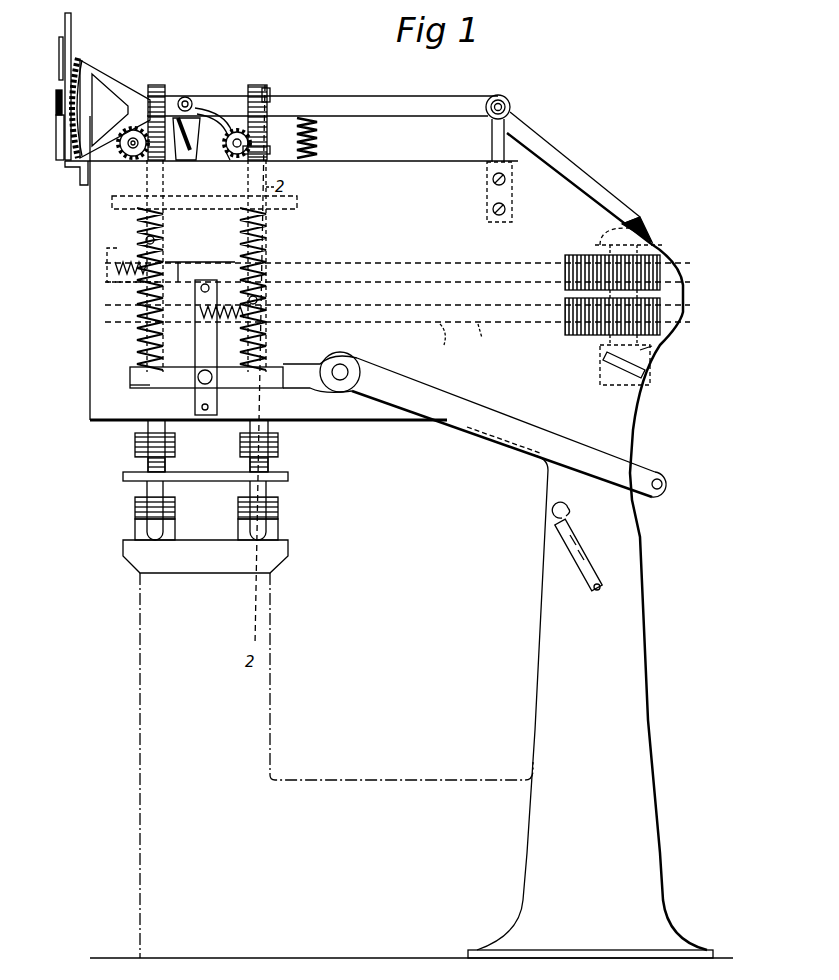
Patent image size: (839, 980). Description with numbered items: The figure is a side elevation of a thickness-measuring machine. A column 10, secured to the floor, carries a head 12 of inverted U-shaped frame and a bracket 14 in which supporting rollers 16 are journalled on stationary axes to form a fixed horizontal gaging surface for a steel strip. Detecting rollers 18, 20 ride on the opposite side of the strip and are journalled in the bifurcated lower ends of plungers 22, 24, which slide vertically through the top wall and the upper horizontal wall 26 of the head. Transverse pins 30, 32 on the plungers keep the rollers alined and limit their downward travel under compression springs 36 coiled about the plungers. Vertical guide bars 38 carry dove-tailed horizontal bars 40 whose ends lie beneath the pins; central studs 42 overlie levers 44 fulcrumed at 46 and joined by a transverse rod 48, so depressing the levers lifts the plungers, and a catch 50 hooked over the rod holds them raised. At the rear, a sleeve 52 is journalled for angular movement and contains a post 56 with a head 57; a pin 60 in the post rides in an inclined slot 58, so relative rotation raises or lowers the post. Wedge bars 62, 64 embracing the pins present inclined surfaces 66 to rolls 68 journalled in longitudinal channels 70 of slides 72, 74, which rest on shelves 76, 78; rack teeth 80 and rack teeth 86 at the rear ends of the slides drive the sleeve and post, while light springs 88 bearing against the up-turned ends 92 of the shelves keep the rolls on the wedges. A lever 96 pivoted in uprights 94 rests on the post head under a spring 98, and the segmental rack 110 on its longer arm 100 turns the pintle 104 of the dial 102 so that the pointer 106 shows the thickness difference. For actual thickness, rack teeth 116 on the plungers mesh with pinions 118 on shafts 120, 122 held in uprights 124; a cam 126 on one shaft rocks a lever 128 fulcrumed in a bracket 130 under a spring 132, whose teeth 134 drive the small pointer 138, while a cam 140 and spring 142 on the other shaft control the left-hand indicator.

The column 10 is at (545, 714).
The head 12 is at (360, 180).
The bracket 14 is at (272, 566).
The rollers 16 is at (150, 521).
The detecting roller 18 is at (270, 463).
The detecting roller 20 is at (146, 462).
The plunger 22 is at (290, 424).
The plunger 24 is at (105, 422).
The upper horizontal wall 26 is at (298, 204).
The pin 30 is at (278, 376).
The pin 32 is at (160, 368).
The compression springs 36 is at (272, 262).
The vertical guide bars 38 is at (206, 377).
The horizontal bars 40 is at (222, 366).
The studs 42 is at (205, 369).
The levers 44 is at (462, 425).
The fulcrum 46 is at (349, 370).
The transverse rod 48 is at (662, 486).
The catch 50 is at (582, 568).
The sleeve 52 is at (646, 374).
The post 56 is at (660, 245).
The head 57 is at (645, 230).
The slot 58 is at (656, 352).
The pin 60 is at (600, 375).
The wedge bar 62 is at (286, 312).
The wedge bar 64 is at (170, 262).
The inclined surfaces 66 is at (318, 316).
The rolls 68 is at (148, 250).
The longitudinal channels 70 is at (182, 275).
The slide 72 is at (492, 340).
The slide 74 is at (430, 265).
The shelf 76 is at (449, 345).
The shelf 78 is at (483, 283).
The rack teeth 80 is at (665, 313).
The rack teeth 86 is at (665, 273).
The springs 88 is at (112, 270).
The up-turned ends 92 is at (106, 250).
The uprights 94 is at (506, 152).
The lever 96 is at (516, 113).
The spring 98 is at (320, 148).
The longer arm 100 is at (330, 100).
The dial 102 is at (72, 33).
The pintle 104 is at (58, 110).
The pointer 106 is at (58, 71).
The segmental rack 110 is at (82, 68).
The rack teeth 116 is at (150, 85).
The pinions 118 is at (119, 143).
The shaft 120 is at (270, 108).
The shaft 122 is at (128, 155).
The uprights 124 is at (250, 150).
The cam 126 is at (226, 152).
The lever 128 is at (180, 112).
The bracket 130 is at (190, 99).
The spring 132 is at (224, 143).
The teeth 134 is at (95, 70).
The small pointer 138 is at (56, 96).
The cam 140 is at (80, 176).
The spring 142 is at (168, 96).